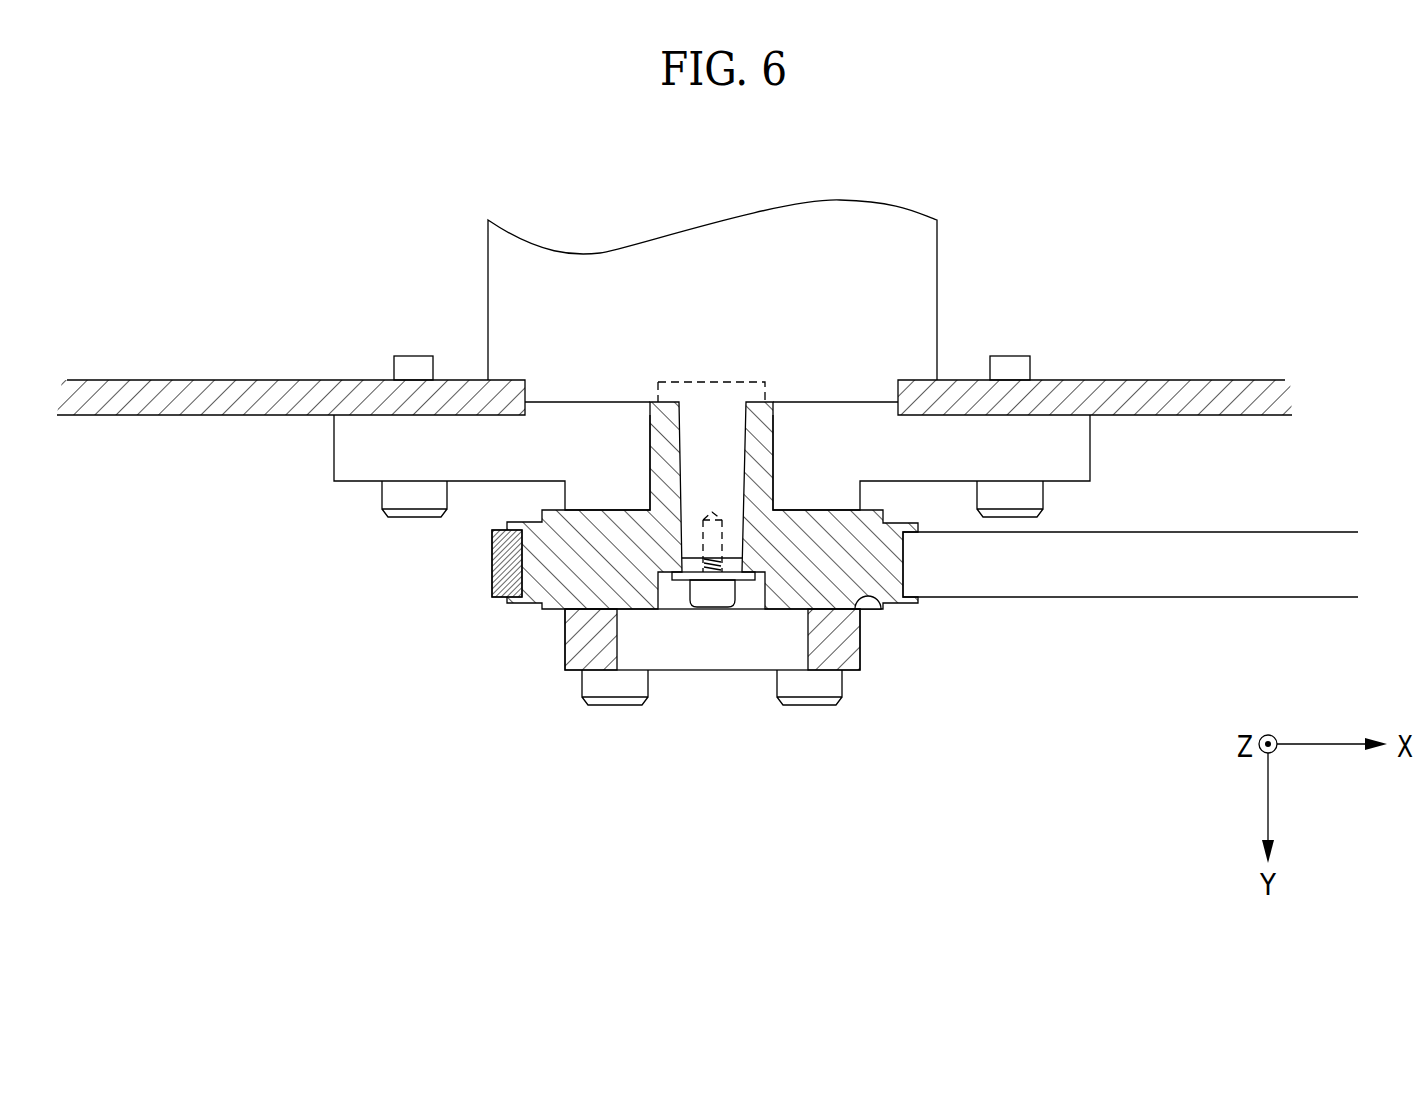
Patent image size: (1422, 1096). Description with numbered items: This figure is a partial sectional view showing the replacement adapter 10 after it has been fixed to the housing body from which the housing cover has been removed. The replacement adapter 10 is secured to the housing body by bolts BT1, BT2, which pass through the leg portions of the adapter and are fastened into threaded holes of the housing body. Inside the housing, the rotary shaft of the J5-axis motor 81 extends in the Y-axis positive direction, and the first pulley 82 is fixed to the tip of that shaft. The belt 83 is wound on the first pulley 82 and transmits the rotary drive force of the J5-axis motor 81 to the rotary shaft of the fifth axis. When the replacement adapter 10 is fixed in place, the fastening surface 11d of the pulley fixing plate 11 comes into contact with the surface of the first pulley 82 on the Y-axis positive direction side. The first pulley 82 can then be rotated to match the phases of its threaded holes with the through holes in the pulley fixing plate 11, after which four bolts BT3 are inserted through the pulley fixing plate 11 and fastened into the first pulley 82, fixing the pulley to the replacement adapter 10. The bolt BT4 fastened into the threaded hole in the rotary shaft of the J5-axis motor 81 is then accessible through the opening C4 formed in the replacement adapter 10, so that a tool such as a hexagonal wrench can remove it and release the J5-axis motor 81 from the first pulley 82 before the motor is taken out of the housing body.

The J5-axis motor 81 is at (522, 288).
The replacement adapter 10 is at (1112, 455).
The bolts BT1 is at (377, 495).
The bolts BT2 is at (1043, 497).
The pulley fixing plate 11 is at (862, 650).
The fastening surface 11d is at (885, 611).
The first pulley 82 is at (528, 607).
The belt 83 is at (1163, 572).
The bolt BT4 is at (710, 607).
The opening C4 is at (617, 638).
The bolts BT3 is at (608, 708).